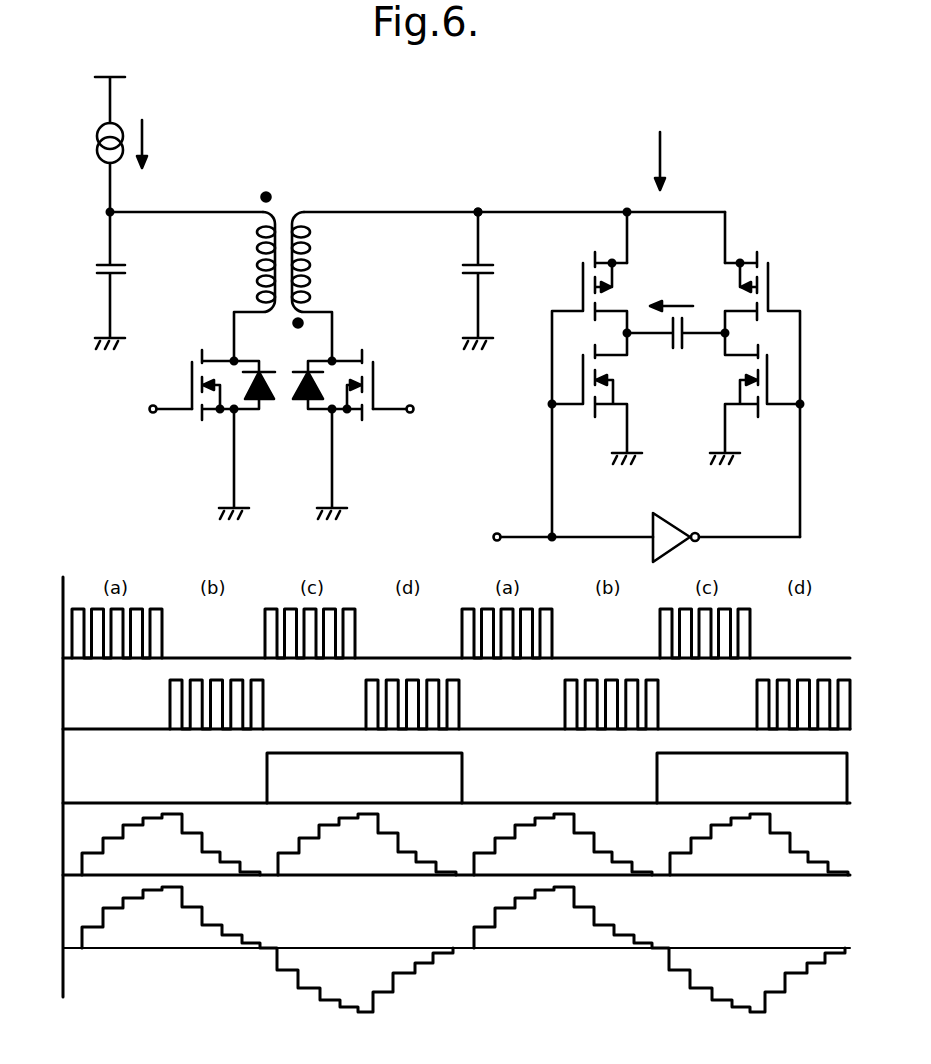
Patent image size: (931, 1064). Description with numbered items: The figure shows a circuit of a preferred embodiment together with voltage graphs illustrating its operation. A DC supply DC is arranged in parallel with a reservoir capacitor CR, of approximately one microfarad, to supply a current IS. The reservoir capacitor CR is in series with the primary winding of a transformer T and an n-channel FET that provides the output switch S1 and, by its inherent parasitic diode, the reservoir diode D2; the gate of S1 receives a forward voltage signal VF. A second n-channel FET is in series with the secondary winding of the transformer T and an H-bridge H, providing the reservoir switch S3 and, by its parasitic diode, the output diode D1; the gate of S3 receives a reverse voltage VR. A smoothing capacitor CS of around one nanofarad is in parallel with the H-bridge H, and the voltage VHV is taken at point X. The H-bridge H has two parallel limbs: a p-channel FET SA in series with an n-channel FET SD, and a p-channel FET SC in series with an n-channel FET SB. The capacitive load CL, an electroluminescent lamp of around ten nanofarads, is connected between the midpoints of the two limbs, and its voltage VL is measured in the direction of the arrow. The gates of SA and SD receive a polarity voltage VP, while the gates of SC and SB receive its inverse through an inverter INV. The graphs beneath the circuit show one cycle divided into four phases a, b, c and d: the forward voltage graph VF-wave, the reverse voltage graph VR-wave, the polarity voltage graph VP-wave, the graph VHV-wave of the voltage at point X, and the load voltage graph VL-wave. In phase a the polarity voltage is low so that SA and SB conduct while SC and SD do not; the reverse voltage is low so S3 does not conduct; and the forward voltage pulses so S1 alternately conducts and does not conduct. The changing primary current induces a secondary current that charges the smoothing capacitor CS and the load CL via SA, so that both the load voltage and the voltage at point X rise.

The DC supply DC is at (86, 144).
The current IS is at (151, 144).
The reservoir capacitor CR is at (90, 280).
The transformer T is at (283, 273).
The point X is at (474, 198).
The voltage at point X VHV is at (486, 205).
The H-bridge H is at (660, 148).
The smoothing capacitor CS is at (460, 280).
The output switch S1 is at (197, 385).
The reservoir switch S3 is at (367, 385).
The output diode D1 is at (306, 376).
The reservoir diode D2 is at (255, 405).
The forward voltage signal VF is at (163, 428).
The reverse voltage VR is at (399, 428).
The p-channel FET SA is at (586, 394).
The n-channel FET SB is at (756, 398).
The p-channel FET SC is at (762, 394).
The n-channel FET SD is at (595, 398).
The capacitive load CL is at (676, 352).
The voltage across the capacitive load VL is at (671, 296).
The inverter INV is at (726, 524).
The polarity voltage VP is at (566, 521).
The forward voltage graph VF-wave is at (438, 633).
The reverse voltage graph VR-wave is at (437, 704).
The polarity voltage graph VP-wave is at (437, 778).
The voltage graph at point X VHV-wave is at (432, 844).
The load voltage graph VL-wave is at (437, 949).